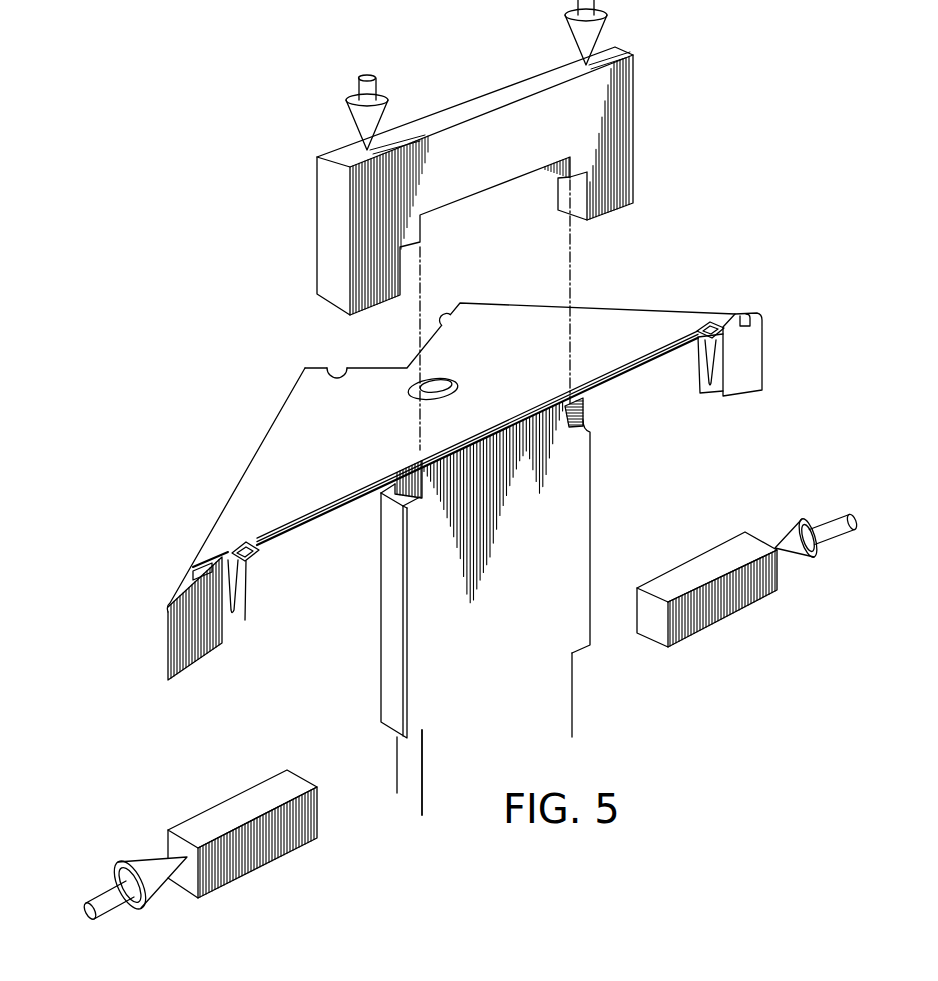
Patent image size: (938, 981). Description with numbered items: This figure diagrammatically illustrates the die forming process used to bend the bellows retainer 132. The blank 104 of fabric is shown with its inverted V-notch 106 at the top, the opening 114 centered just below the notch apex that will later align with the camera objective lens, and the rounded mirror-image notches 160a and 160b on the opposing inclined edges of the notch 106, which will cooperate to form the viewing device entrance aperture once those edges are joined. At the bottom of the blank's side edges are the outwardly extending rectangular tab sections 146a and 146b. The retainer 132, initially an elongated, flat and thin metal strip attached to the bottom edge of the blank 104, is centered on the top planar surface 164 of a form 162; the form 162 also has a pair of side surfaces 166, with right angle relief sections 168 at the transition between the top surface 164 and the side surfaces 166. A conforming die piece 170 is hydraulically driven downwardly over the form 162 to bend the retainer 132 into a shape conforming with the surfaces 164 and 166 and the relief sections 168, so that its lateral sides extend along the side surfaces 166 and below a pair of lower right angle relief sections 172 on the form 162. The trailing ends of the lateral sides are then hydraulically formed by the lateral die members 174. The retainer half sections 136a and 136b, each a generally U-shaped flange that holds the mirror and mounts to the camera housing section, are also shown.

The blank 104 is at (262, 429).
The inverted V-notch 106 is at (383, 363).
The opening 114 is at (427, 383).
The retainer 132 is at (665, 351).
The retainer half section 136a is at (707, 394).
The retainer half section 136b is at (233, 616).
The rectangular tab section 146a is at (753, 391).
The rectangular tab section 146b is at (199, 649).
The rounded notch 160a is at (441, 320).
The rounded notch 160b is at (333, 378).
The form 162 is at (566, 521).
The top planar surface 164 is at (537, 408).
The side surfaces 166 is at (393, 545).
The right angle relief sections 168 is at (414, 497).
The die piece 170 is at (498, 100).
The lower right angle relief sections 172 is at (420, 732).
The lateral die members 174 is at (253, 803).